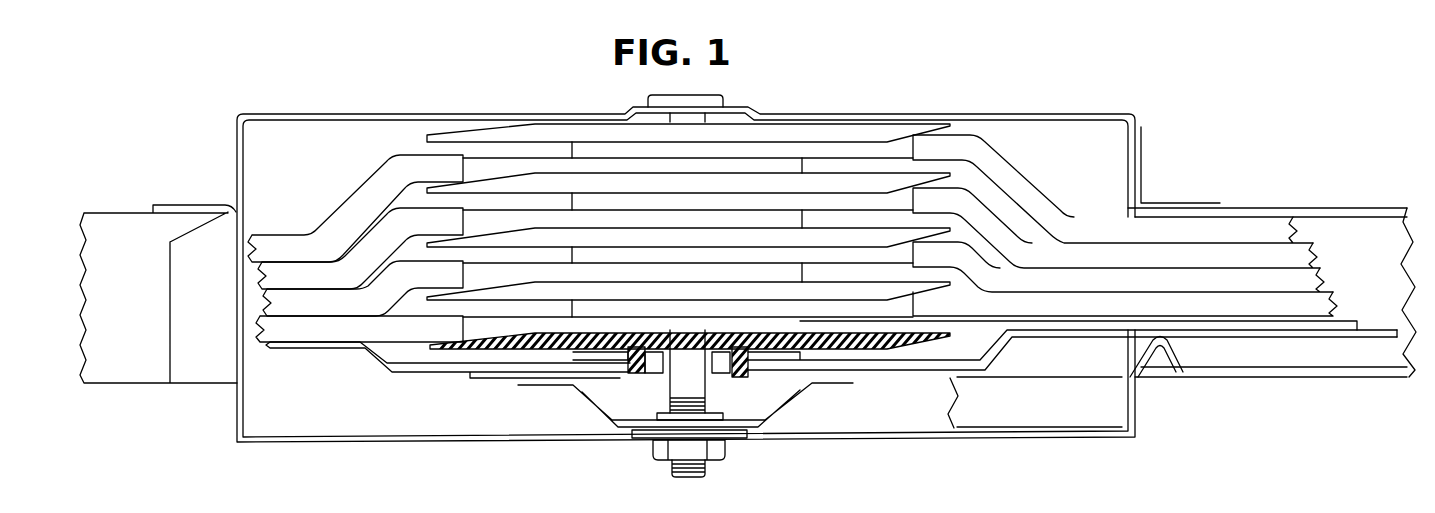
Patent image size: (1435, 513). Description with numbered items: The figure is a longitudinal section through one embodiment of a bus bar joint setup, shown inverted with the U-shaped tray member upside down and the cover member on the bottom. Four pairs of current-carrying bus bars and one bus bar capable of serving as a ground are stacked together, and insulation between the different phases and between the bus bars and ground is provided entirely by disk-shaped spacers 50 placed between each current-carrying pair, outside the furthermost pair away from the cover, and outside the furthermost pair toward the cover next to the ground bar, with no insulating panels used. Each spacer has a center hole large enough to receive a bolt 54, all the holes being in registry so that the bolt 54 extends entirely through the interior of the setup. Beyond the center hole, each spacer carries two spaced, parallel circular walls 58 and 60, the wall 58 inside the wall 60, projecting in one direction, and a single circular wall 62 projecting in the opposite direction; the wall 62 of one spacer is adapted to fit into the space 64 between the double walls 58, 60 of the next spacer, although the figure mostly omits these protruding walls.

The disk-shaped spacers 50 is at (945, 300).
The bolt 54 is at (690, 478).
The circular wall 58 is at (718, 366).
The circular wall 60 is at (750, 367).
The circular wall 62 is at (748, 362).
The space 64 is at (648, 378).